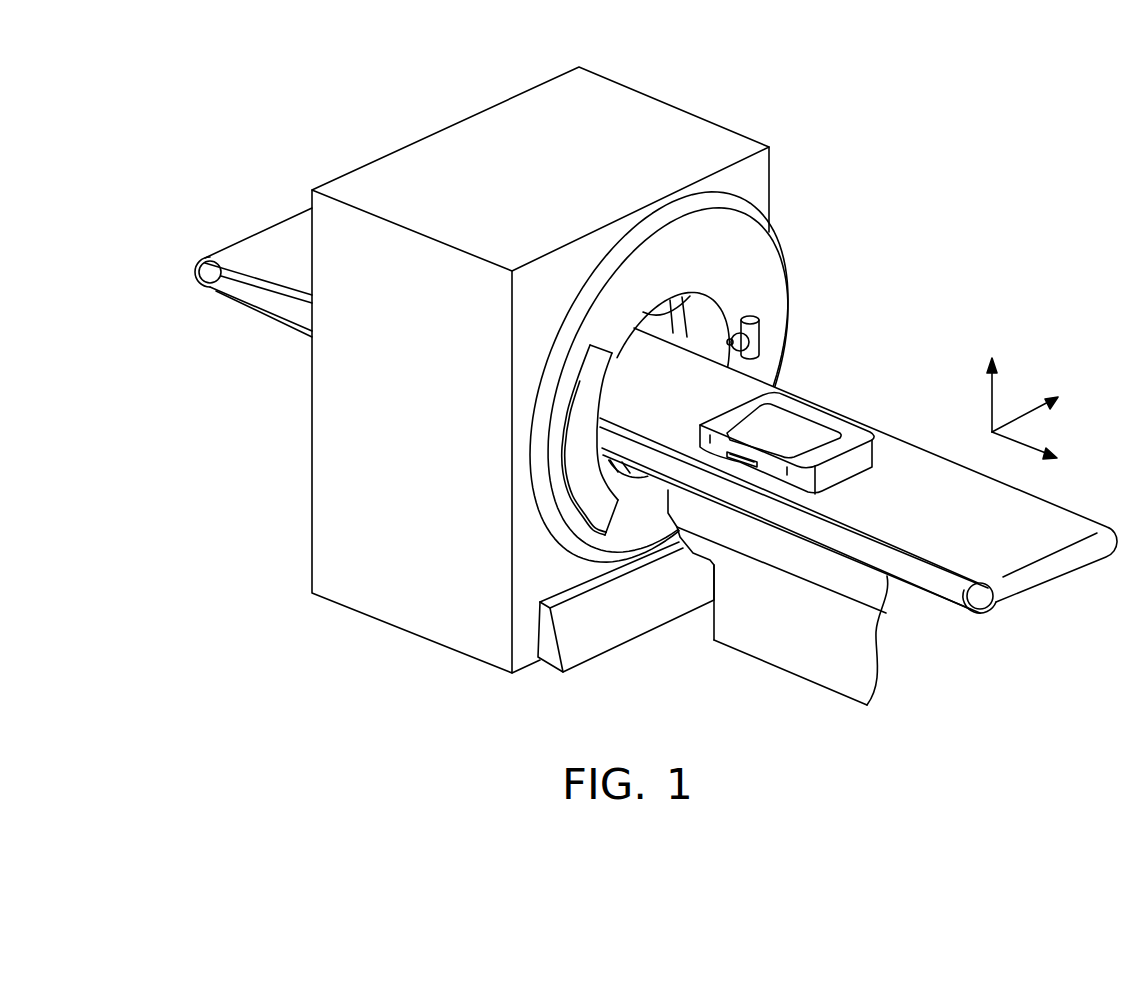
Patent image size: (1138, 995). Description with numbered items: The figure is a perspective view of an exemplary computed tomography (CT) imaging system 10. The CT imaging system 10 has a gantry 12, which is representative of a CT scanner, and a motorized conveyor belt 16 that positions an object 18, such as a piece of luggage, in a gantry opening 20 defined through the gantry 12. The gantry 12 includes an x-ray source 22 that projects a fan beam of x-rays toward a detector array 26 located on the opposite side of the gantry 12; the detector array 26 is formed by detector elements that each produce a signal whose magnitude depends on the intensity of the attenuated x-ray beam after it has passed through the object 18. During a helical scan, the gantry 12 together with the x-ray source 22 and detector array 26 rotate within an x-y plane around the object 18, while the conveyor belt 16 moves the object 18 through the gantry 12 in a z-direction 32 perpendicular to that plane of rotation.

The CT imaging system 10 is at (954, 288).
The gantry 12 is at (747, 256).
The motorized conveyor belt 16 is at (867, 560).
The object 18 is at (793, 432).
The gantry opening 20 is at (700, 293).
The x-ray source 22 is at (760, 328).
The detector array 26 is at (582, 462).
The z-direction 32 is at (1018, 443).